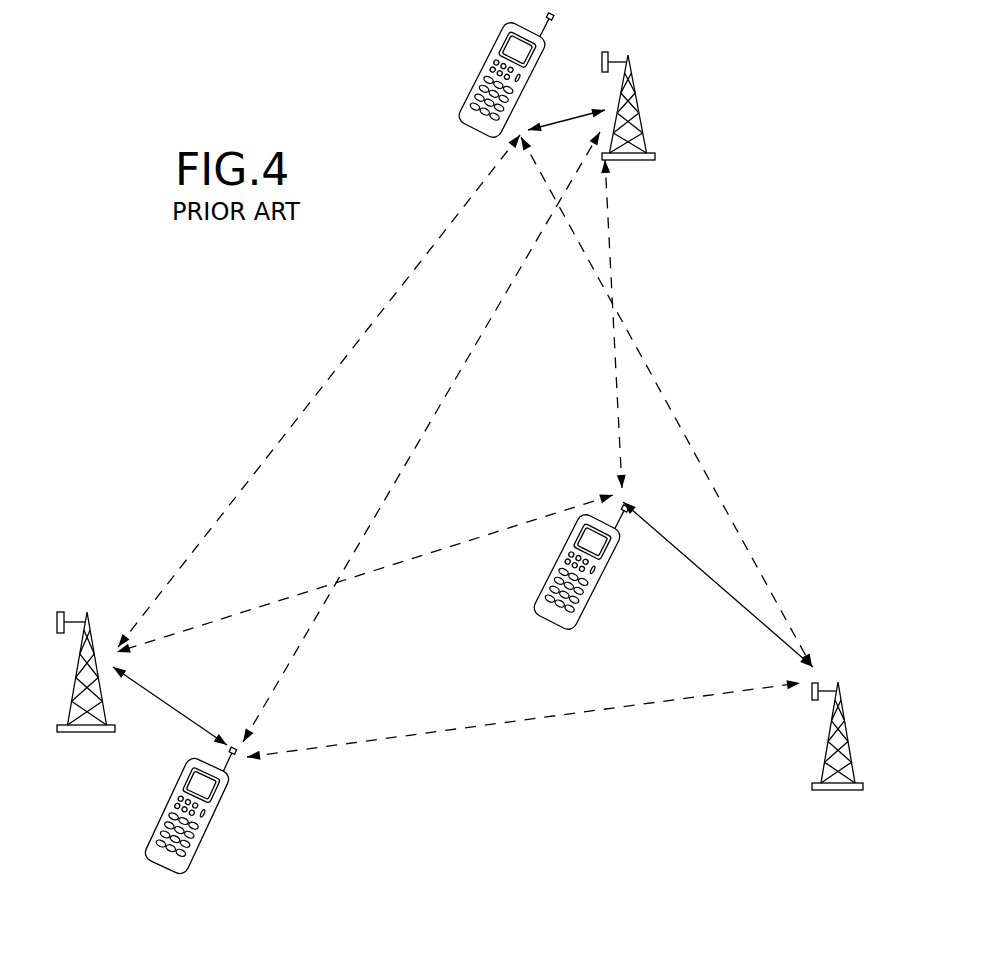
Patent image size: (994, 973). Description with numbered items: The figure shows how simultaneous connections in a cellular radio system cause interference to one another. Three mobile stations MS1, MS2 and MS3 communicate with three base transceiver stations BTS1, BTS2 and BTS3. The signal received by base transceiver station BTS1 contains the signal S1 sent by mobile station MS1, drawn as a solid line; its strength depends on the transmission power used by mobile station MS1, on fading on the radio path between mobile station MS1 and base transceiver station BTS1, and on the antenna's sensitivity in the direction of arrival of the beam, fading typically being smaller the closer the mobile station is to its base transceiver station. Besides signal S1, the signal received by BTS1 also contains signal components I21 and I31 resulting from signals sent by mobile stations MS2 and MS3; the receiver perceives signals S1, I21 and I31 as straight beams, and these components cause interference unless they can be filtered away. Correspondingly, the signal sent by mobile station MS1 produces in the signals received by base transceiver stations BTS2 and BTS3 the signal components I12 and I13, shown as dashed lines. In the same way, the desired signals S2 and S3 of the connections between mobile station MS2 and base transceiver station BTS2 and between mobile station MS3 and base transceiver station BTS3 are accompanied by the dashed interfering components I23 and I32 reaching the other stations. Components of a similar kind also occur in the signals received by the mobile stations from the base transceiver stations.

The mobile station MS1 is at (489, 70).
The mobile station MS2 is at (192, 819).
The mobile station MS3 is at (582, 575).
The base transceiver station BTS1 is at (653, 106).
The base transceiver station BTS2 is at (86, 688).
The base transceiver station BTS3 is at (840, 749).
The signal S1 is at (566, 112).
The signal S2 is at (170, 706).
The signal S3 is at (718, 584).
The signal component I12 is at (319, 391).
The signal component I13 is at (666, 402).
The signal component I21 is at (421, 437).
The signal component I23 is at (523, 719).
The signal component I31 is at (629, 324).
The signal component I32 is at (365, 574).